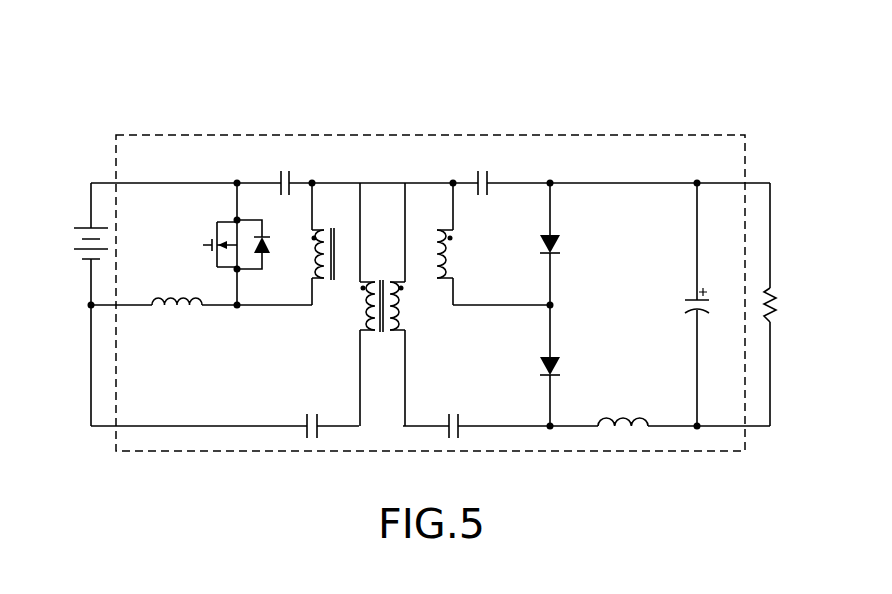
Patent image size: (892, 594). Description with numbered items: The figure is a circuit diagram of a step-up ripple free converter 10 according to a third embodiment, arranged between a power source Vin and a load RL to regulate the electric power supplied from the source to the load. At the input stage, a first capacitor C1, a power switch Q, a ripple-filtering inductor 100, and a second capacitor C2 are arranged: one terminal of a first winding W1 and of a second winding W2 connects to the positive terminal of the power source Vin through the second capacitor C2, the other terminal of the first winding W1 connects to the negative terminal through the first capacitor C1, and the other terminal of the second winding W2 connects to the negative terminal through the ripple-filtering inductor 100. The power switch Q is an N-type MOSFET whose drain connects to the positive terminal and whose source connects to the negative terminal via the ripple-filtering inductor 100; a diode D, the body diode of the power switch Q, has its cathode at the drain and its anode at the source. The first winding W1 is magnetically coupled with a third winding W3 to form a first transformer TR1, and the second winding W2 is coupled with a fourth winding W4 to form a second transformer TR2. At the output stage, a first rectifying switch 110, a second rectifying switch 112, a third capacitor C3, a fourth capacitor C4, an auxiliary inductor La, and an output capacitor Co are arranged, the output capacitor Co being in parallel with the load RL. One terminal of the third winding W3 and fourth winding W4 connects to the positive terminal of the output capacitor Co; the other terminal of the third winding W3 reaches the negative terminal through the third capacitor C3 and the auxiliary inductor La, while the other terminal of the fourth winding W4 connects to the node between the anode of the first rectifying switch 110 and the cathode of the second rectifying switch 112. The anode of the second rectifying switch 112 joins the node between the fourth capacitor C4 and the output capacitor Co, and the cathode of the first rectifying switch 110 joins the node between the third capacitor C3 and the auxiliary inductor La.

The step-up ripple free converter 10 is at (418, 140).
The ripple-filtering inductor 100 is at (176, 296).
The first rectifying switch 110 is at (562, 362).
The second rectifying switch 112 is at (562, 240).
The power source Vin is at (72, 243).
The power switch Q is at (209, 244).
The diode D is at (261, 244).
The first capacitor C1 is at (311, 415).
The second capacitor C2 is at (280, 171).
The third capacitor C3 is at (452, 415).
The fourth capacitor C4 is at (482, 171).
The first transformer TR1 is at (383, 293).
The second transformer TR2 is at (420, 257).
The first winding W1 is at (365, 312).
The second winding W2 is at (313, 250).
The third winding W3 is at (400, 312).
The fourth winding W4 is at (455, 247).
The auxiliary inductor La is at (623, 410).
The output capacitor Co is at (682, 303).
The load RL is at (787, 305).